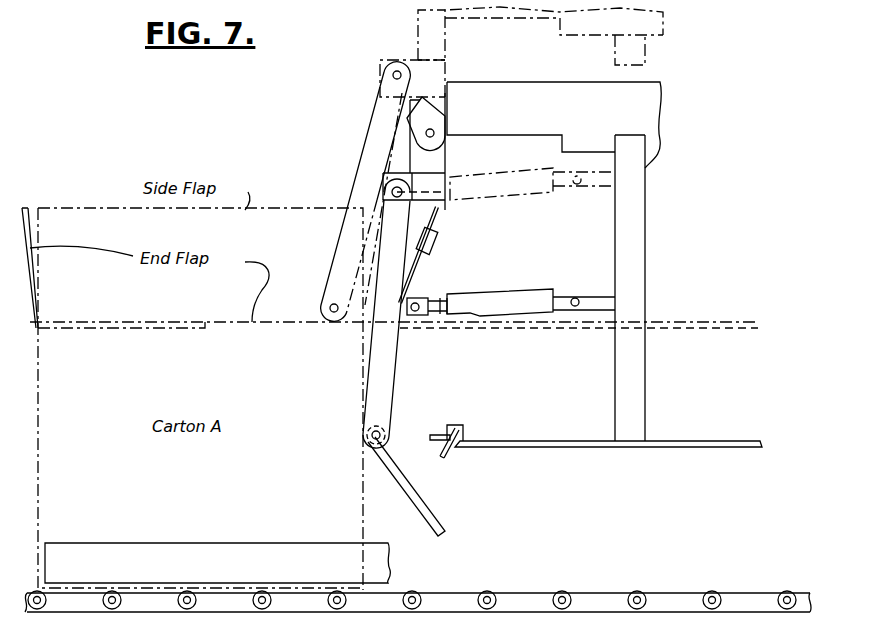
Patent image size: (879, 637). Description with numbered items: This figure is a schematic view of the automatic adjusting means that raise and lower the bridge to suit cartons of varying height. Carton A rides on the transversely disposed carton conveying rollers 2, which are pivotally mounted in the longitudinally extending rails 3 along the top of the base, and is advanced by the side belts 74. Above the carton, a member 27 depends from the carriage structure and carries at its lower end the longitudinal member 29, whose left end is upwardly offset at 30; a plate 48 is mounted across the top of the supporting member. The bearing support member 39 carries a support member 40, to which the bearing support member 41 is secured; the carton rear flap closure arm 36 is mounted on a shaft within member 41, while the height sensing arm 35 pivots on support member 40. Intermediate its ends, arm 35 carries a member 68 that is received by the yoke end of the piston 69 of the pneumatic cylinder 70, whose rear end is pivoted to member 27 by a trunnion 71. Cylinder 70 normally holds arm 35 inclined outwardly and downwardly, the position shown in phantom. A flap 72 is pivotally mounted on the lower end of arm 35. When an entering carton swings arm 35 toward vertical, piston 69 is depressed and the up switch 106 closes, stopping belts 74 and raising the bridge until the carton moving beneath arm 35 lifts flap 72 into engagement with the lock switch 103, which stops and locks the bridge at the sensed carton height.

The carton conveying rollers 2 is at (562, 592).
The longitudinally extending rails 3 is at (672, 593).
The depending member 27 is at (640, 362).
The longitudinal member 29 is at (665, 322).
The upwardly offset portion 30 is at (432, 434).
The height sensing arm 35 is at (367, 125).
The carton rear flap closure arm 36 is at (436, 118).
The bearing support member 39 is at (445, 202).
The support member 40 is at (398, 173).
The bearing support member 41 is at (436, 158).
The plate 48 is at (610, 126).
The member 68 is at (404, 318).
The piston 69 is at (430, 300).
The pneumatic cylinder 70 is at (490, 175).
The trunnion 71 is at (594, 296).
The flap 72 is at (430, 507).
The belts 74 is at (223, 575).
The lock switch 103 is at (456, 426).
The up switch 106 is at (432, 243).